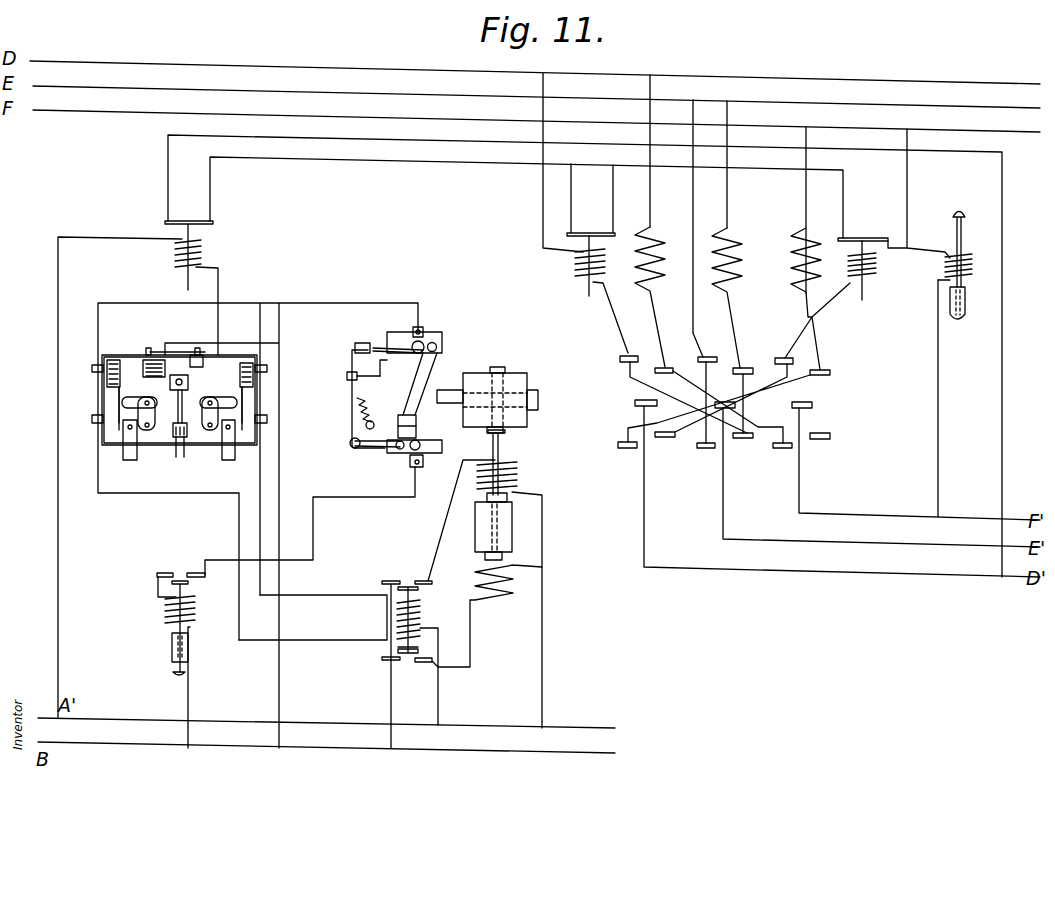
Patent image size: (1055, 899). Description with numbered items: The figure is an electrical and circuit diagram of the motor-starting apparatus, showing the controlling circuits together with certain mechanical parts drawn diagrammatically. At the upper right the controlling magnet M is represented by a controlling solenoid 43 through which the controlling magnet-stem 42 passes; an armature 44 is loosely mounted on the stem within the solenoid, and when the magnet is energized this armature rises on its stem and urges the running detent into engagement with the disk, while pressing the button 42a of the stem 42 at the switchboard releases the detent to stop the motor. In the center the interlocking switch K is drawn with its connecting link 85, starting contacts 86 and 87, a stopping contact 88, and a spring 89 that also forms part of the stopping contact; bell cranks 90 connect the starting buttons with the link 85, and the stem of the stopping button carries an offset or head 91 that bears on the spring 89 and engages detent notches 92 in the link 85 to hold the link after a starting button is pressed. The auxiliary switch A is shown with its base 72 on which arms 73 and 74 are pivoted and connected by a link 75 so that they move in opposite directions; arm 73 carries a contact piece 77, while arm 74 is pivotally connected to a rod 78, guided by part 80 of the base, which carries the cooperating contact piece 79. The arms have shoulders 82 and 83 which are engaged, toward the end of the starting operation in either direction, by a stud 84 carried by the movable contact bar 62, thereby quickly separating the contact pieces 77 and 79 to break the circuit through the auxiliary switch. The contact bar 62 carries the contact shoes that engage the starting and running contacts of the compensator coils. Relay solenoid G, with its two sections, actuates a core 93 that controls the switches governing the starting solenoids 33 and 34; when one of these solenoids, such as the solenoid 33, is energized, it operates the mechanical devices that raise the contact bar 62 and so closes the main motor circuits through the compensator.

The starting solenoid 33 is at (505, 472).
The starting solenoid 34 is at (490, 584).
The controlling magnet-stem 42 is at (949, 252).
The button 42a is at (975, 215).
The controlling magnet or solenoid 43 is at (945, 266).
The armature 44 is at (950, 307).
The contact bar 62 is at (498, 380).
The base 72 is at (437, 373).
The arm 73 is at (401, 351).
The arm 74 is at (388, 447).
The link 75 is at (413, 411).
The contact piece 77 is at (375, 347).
The rod 78 is at (352, 417).
The contact piece 79 is at (362, 347).
The guide part of the base 80 is at (347, 376).
The shoulder 82 is at (442, 356).
The shoulder 83 is at (421, 468).
The stud 84 is at (447, 397).
The connecting link 85 is at (200, 398).
The starting contact 86 is at (118, 408).
The starting contact 87 is at (262, 397).
The stopping contact 88 is at (200, 367).
The spring 89 is at (116, 389).
The bell crank 90 is at (148, 405).
The offset or head 91 is at (160, 440).
The detent notches 92 is at (180, 417).
The core 93 is at (381, 659).